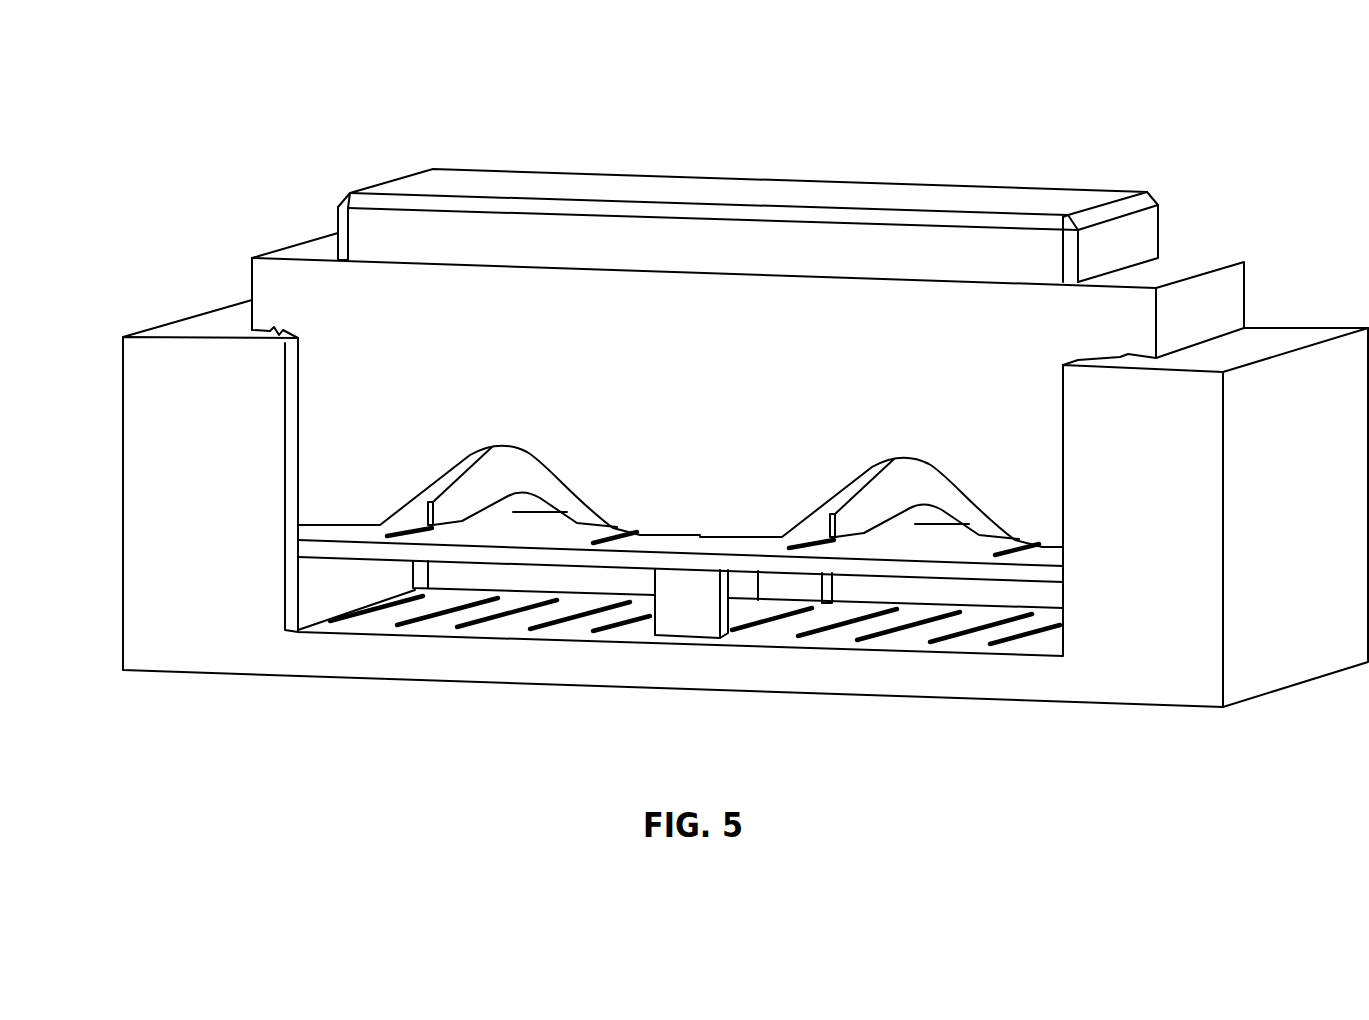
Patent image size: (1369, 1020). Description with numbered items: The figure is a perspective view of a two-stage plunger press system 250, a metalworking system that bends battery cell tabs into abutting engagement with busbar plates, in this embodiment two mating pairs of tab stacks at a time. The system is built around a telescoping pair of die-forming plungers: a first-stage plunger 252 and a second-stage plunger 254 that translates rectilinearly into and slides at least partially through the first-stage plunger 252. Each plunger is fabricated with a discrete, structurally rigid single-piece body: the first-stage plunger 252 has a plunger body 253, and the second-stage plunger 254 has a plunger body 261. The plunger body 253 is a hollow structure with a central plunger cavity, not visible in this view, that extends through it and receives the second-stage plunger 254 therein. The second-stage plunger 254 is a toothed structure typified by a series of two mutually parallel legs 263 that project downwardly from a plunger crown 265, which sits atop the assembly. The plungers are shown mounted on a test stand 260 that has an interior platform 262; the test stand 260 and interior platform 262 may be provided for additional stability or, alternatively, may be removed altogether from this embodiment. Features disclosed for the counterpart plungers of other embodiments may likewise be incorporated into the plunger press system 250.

The two-stage plunger press system 250 is at (200, 75).
The first-stage plunger 252 is at (223, 278).
The plunger body 253 is at (293, 243).
The second-stage plunger 254 is at (327, 193).
The plunger body 261 is at (418, 170).
The plunger crown 265 is at (594, 190).
The test stand 260 is at (122, 428).
The interior platform 262 is at (584, 565).
The legs 263 is at (453, 508).